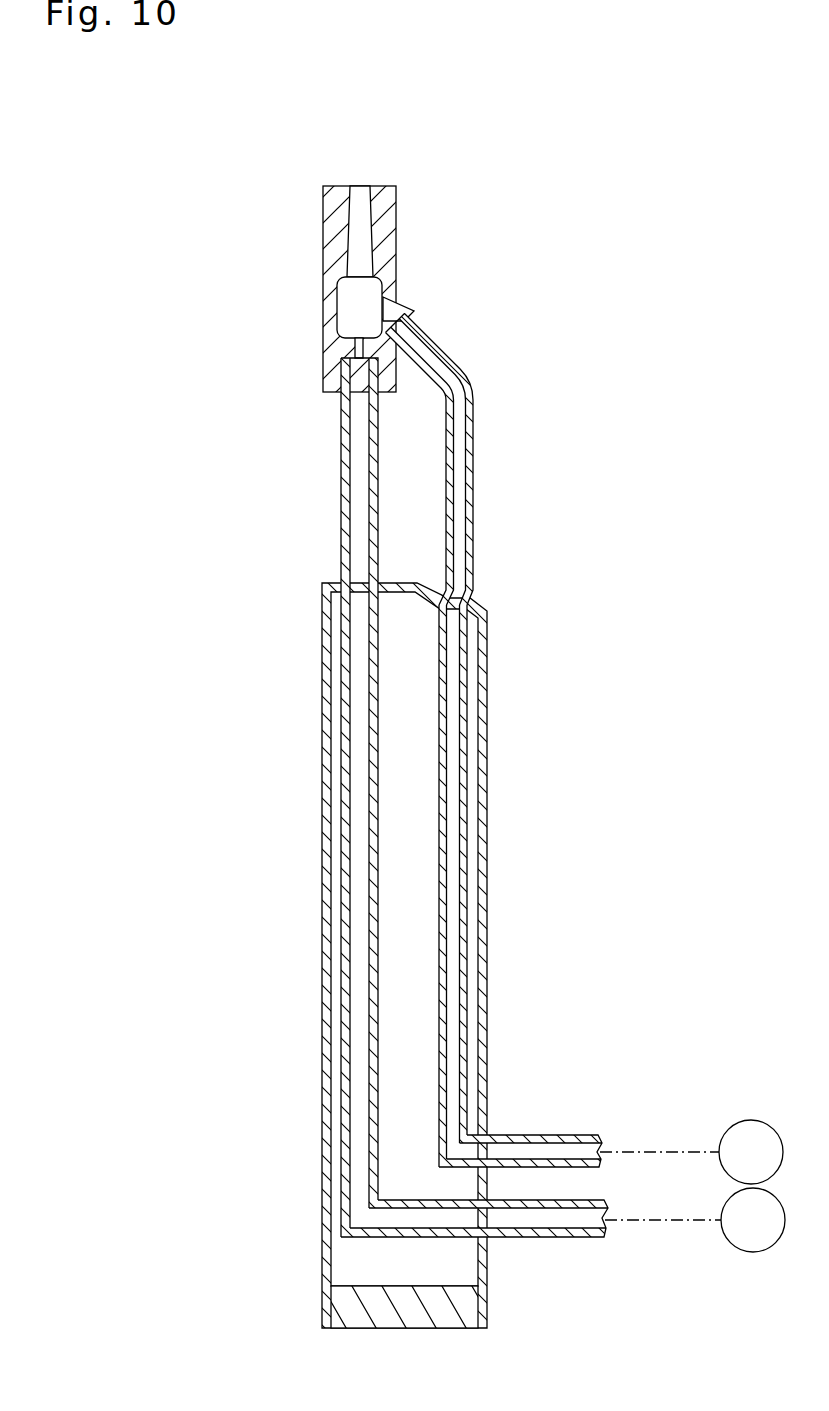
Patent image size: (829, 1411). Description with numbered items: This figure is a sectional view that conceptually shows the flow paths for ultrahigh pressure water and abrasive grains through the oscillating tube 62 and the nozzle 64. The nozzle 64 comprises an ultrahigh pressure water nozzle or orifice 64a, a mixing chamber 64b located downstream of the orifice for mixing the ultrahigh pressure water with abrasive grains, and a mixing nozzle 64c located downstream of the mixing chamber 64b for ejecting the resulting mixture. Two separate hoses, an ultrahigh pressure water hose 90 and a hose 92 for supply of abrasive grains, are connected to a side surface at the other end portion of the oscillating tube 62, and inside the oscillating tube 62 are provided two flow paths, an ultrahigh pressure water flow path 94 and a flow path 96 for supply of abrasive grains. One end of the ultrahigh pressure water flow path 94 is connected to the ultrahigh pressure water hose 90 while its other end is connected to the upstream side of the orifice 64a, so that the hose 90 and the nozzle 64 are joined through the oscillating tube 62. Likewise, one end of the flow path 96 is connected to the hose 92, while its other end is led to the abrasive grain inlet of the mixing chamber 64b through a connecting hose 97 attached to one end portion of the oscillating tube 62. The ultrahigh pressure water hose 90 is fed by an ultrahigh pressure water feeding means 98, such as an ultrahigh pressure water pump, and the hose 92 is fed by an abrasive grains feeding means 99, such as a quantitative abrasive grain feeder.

The nozzle 64 is at (282, 245).
The ultrahigh pressure water nozzle (orifice) 64a is at (357, 350).
The mixing chamber 64b is at (355, 313).
The mixing nozzle 64c is at (360, 240).
The oscillating tube 62 is at (488, 670).
The ultrahigh pressure water flow path 94 is at (360, 773).
The ultrahigh pressure water hose 90 is at (555, 1220).
The connecting hose 97 is at (460, 477).
The flow path for supply of abrasive grains 96 is at (455, 770).
The hose for supply of abrasive grains 92 is at (549, 1150).
The ultrahigh pressure water feeding means 98 is at (734, 1237).
The abrasive grains feeding means 99 is at (732, 1169).